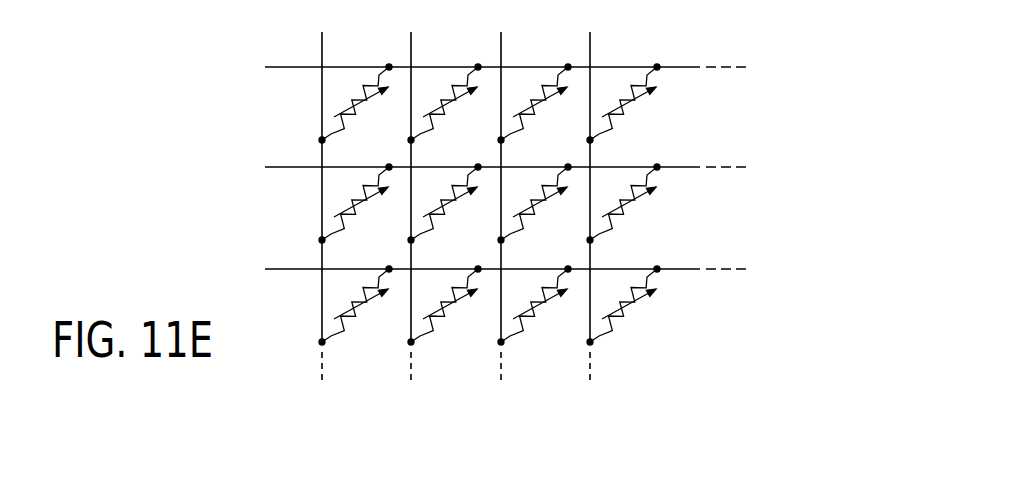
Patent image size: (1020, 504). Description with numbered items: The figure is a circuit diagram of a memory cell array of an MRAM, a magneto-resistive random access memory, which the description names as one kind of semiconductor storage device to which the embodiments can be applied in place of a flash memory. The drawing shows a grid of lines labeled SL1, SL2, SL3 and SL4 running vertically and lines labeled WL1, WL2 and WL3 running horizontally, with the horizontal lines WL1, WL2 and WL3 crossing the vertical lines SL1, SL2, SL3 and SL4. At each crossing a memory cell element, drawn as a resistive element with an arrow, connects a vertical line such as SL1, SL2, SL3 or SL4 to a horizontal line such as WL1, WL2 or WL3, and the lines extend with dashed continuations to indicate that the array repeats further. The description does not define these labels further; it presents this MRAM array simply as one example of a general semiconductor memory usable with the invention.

The source line 1 SL1 is at (322, 194).
The source line 2 SL2 is at (411, 194).
The source line 3 SL3 is at (501, 194).
The source line 4 SL4 is at (590, 194).
The word line 1 WL1 is at (481, 67).
The word line 2 WL2 is at (481, 167).
The word line 3 WL3 is at (481, 269).